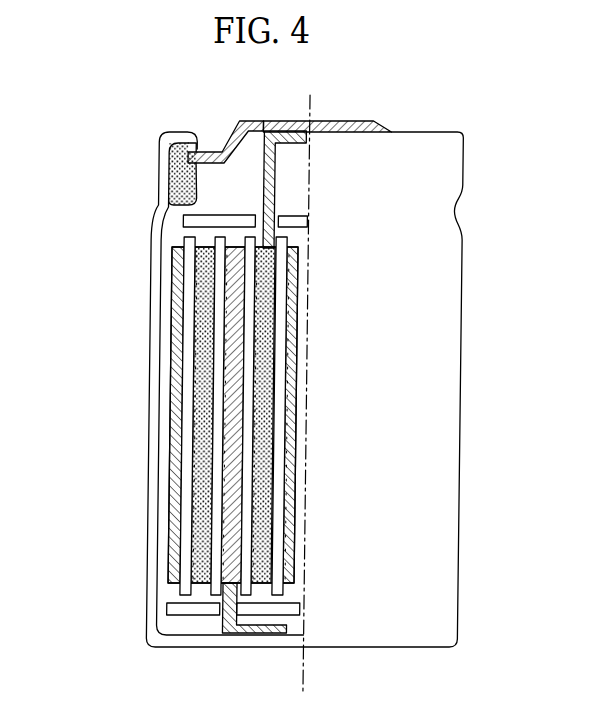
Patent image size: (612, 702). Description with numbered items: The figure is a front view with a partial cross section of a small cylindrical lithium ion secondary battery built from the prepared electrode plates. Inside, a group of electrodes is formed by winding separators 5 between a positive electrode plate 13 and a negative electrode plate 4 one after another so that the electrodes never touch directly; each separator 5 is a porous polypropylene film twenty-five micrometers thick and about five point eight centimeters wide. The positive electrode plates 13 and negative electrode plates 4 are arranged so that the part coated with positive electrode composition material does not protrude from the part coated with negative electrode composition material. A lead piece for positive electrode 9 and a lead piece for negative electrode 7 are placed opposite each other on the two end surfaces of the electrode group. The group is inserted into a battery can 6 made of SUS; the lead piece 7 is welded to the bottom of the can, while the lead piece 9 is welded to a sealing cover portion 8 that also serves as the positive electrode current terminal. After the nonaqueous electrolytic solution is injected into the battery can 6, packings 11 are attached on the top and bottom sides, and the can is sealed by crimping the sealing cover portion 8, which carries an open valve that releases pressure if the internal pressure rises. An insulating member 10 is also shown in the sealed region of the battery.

The negative electrode plate 4 is at (176, 507).
The separator 5 is at (184, 592).
The battery can 6 is at (150, 432).
The lead piece for negative electrode 7 is at (222, 635).
The sealing cover portion 8 is at (351, 122).
The lead piece for positive electrode 9 is at (261, 175).
The insulating member 10 is at (195, 141).
The packing 11 is at (163, 228).
The positive electrode plate 13 is at (267, 585).